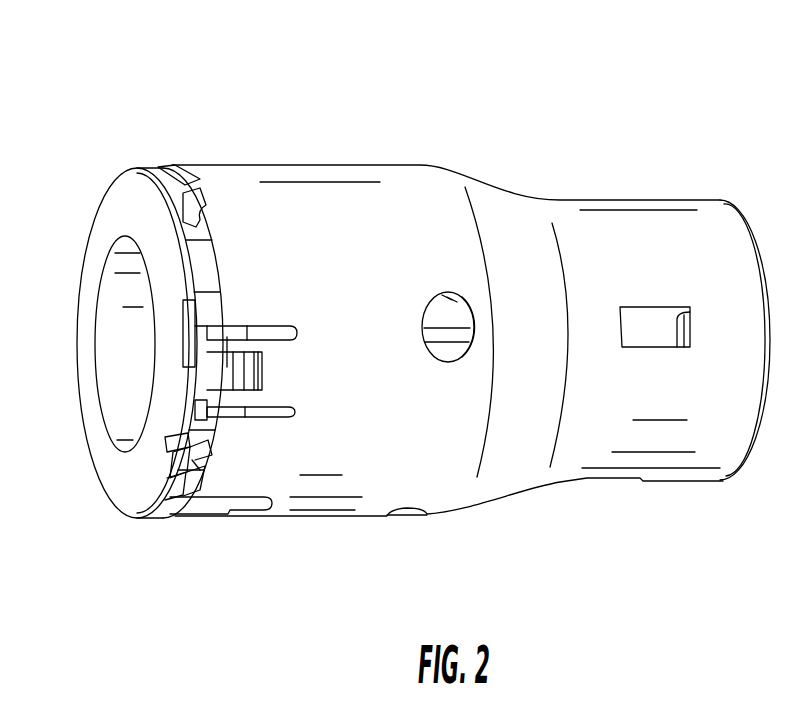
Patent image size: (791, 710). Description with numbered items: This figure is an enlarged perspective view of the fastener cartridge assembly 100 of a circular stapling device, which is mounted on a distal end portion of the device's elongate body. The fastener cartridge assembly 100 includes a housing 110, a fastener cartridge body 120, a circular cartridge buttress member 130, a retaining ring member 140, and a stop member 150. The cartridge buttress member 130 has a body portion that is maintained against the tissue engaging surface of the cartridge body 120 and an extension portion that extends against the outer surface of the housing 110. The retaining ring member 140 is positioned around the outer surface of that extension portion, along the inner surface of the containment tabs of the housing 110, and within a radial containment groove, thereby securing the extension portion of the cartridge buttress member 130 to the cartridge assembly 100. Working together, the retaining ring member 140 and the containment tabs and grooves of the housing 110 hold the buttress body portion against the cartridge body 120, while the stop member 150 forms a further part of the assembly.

The fastener cartridge assembly 100 is at (246, 48).
The housing 110 is at (317, 164).
The fastener cartridge body 120 is at (160, 210).
The circular cartridge buttress member 130 is at (123, 492).
The retaining ring member 140 is at (197, 490).
The stop member 150 is at (180, 486).